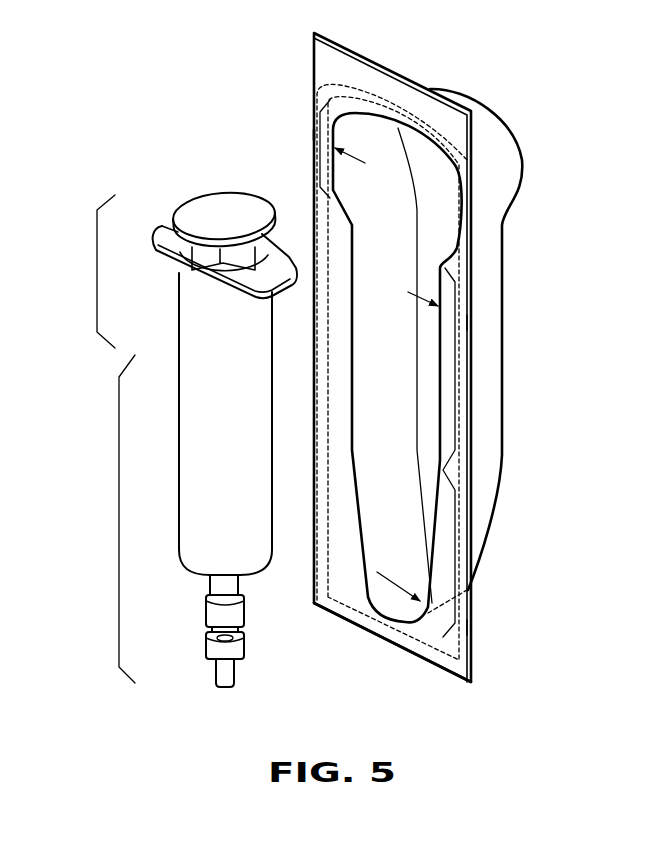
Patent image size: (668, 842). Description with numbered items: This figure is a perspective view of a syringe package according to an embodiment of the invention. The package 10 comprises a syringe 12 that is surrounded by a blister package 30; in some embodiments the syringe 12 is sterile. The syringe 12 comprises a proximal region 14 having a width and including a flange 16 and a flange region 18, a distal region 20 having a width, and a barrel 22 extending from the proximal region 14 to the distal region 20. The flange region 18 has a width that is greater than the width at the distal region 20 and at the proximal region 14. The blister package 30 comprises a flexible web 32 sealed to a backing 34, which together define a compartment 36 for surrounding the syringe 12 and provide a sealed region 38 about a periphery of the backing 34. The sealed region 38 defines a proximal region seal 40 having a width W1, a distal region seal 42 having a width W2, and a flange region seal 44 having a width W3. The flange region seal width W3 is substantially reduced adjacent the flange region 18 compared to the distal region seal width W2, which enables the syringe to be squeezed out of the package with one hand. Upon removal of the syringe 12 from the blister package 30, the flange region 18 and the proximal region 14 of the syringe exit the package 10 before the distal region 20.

The package 10 is at (242, 78).
The syringe 12 is at (98, 372).
The proximal region 14 is at (97, 272).
The flange 16 is at (172, 245).
The flange region 18 is at (257, 282).
The distal region 20 is at (119, 522).
The barrel 22 is at (190, 456).
The blister package 30 is at (560, 310).
The flexible web 32 is at (500, 163).
The backing 34 is at (382, 78).
The compartment 36 is at (385, 377).
The sealed region 38 is at (458, 668).
The proximal region seal 40 is at (457, 303).
The distal region seal 42 is at (457, 558).
The flange region seal 44 is at (320, 162).
The width of proximal region seal W1 is at (469, 323).
The width of distal region seal W2 is at (470, 628).
The width of flange region seal W3 is at (313, 133).